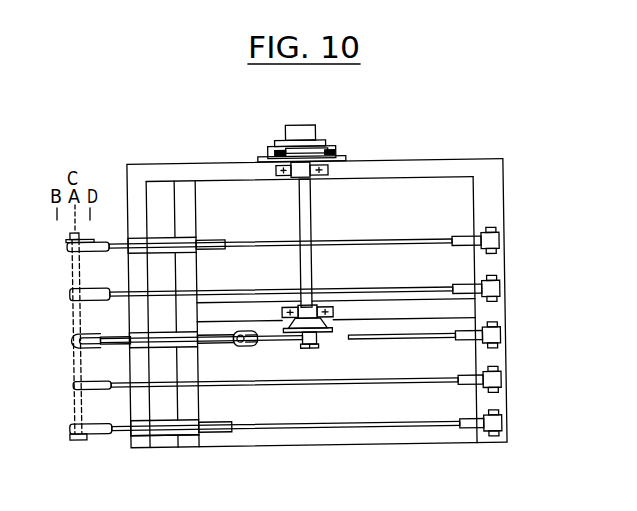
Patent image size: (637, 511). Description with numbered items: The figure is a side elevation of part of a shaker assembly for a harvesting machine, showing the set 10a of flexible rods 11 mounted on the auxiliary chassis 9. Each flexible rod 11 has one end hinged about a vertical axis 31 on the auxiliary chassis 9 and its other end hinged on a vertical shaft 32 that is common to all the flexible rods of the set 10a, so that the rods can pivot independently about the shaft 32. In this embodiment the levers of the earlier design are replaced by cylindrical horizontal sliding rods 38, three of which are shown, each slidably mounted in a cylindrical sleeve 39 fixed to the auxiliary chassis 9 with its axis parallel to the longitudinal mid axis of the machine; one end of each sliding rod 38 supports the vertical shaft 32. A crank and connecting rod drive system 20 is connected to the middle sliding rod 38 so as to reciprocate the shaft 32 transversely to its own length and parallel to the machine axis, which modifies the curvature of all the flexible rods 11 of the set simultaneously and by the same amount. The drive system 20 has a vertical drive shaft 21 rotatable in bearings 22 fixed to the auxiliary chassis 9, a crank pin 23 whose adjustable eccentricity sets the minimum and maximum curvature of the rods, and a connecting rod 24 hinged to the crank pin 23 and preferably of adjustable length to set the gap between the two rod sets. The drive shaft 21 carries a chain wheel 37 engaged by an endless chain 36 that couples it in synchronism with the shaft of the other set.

The auxiliary chassis 9 is at (317, 268).
The set of flexible rods 10a is at (405, 221).
The flexible rods 11 is at (399, 331).
The reciprocating motion drive device 20 is at (335, 344).
The drive shaft 21 is at (312, 216).
The bearings 22 is at (302, 172).
The crank pin 23 is at (316, 348).
The connecting rod 24 is at (282, 341).
The vertical hinge axis 31 is at (494, 222).
The vertical shaft 32 is at (77, 441).
The endless chain 36 is at (340, 148).
The chain wheel 37 is at (286, 152).
The sliding rod 38 is at (212, 237).
The cylindrical sleeve 39 is at (162, 235).